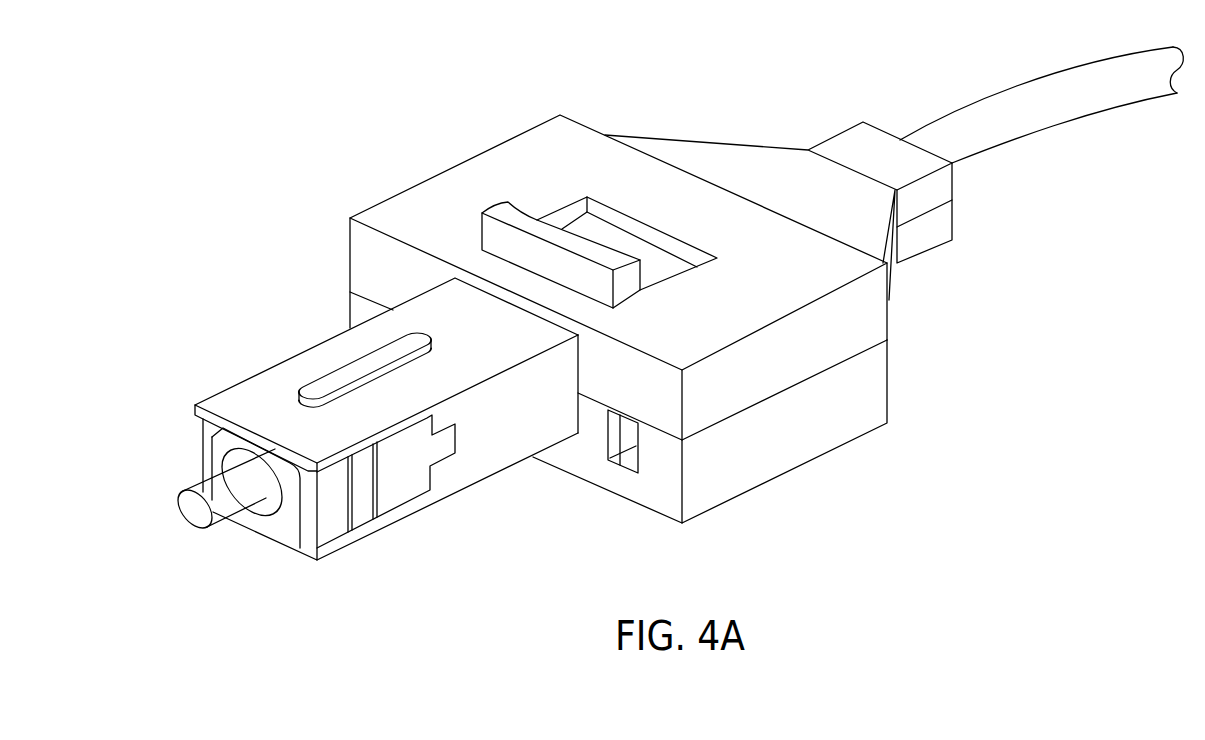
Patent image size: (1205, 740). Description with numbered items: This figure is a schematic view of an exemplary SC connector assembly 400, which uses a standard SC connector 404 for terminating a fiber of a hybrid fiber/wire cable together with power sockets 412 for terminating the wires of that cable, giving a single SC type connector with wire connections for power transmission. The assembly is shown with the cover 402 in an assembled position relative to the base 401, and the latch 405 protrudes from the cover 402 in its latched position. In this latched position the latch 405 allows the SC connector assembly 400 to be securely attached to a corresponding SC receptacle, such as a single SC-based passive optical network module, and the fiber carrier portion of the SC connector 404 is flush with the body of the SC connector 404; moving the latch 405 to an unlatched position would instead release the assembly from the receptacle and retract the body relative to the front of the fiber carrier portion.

The SC connector assembly 400 is at (808, 513).
The base 401 is at (852, 418).
The cover 402 is at (402, 210).
The SC connector 404 is at (315, 367).
The latch 405 is at (507, 207).
The power socket 412 is at (627, 460).